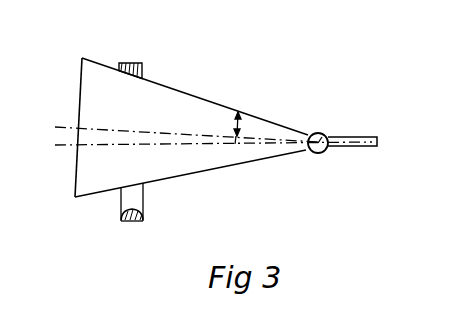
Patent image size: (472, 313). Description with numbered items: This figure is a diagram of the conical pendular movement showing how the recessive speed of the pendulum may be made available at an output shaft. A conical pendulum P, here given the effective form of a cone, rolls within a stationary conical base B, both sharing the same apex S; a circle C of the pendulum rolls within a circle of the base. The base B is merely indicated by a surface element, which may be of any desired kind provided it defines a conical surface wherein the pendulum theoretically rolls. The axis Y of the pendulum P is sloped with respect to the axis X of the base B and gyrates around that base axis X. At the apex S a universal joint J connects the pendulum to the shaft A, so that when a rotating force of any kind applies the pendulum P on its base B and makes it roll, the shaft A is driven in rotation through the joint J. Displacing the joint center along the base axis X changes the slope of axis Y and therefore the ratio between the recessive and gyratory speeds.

The conical pendulum P is at (70, 188).
The axis of the pendulum Y is at (179, 129).
The axis of the base X is at (204, 146).
The conical base B is at (135, 62).
The circle of the pendulum C is at (132, 202).
The apex S is at (317, 153).
The universal joint J is at (329, 125).
The shaft A is at (358, 136).